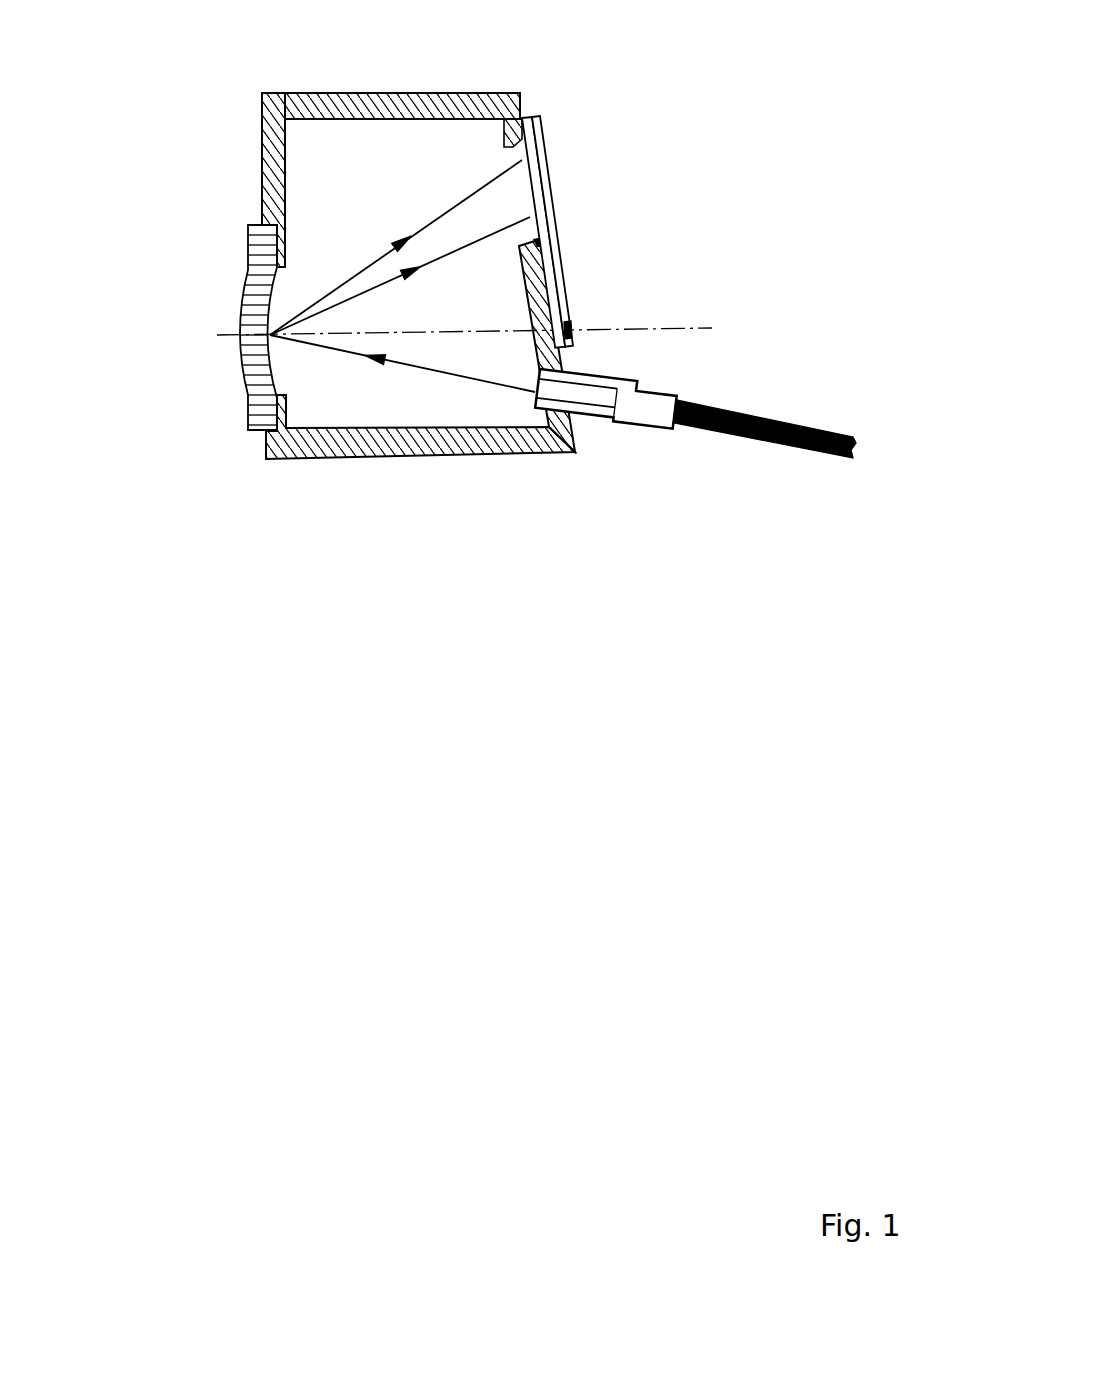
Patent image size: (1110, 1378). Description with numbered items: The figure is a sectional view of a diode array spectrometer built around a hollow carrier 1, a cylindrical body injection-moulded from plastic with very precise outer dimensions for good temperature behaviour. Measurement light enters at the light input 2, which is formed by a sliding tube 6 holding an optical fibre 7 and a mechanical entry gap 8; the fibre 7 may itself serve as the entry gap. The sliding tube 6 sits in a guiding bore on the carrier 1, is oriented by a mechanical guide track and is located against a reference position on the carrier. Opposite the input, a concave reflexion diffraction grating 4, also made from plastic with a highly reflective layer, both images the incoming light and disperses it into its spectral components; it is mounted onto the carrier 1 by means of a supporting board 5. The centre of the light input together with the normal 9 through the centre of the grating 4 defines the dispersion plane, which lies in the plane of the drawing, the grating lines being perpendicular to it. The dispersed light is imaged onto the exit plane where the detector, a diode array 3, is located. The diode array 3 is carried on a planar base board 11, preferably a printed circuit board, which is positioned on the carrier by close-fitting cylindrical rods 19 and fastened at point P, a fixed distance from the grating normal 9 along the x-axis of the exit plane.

The carrier 1 is at (273, 462).
The light input 2 is at (490, 458).
The diode array 3 is at (555, 188).
The concave reflexion diffraction grating 4 is at (237, 312).
The supporting board 5 is at (262, 168).
The sliding tube 6 is at (610, 425).
The optical fibre 7 is at (723, 453).
The mechanical entry gap 8 is at (533, 388).
The normal of the grating 9 is at (690, 318).
The base board 11 is at (545, 110).
The cylindrical rods 19 is at (572, 337).
The point P is at (573, 308).